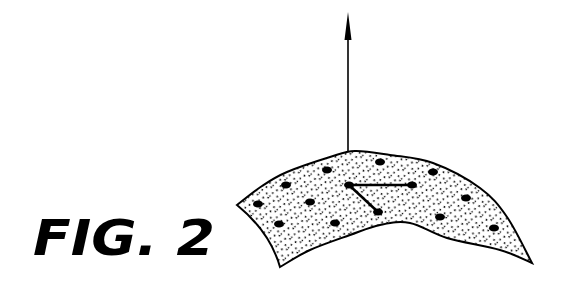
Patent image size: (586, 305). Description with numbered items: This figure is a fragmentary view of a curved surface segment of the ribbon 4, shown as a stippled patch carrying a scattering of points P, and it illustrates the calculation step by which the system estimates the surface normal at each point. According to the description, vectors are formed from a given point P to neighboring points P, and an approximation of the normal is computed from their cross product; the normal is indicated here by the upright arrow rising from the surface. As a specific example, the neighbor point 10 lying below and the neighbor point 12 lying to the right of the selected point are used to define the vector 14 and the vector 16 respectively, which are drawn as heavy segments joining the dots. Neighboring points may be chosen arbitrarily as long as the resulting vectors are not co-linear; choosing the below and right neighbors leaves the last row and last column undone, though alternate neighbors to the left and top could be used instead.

The ribbon 4 is at (254, 189).
The points P is at (467, 198).
The neighbor point 10 is at (380, 214).
The neighbor point 12 is at (414, 184).
The vector 14 is at (362, 197).
The vector 16 is at (385, 184).